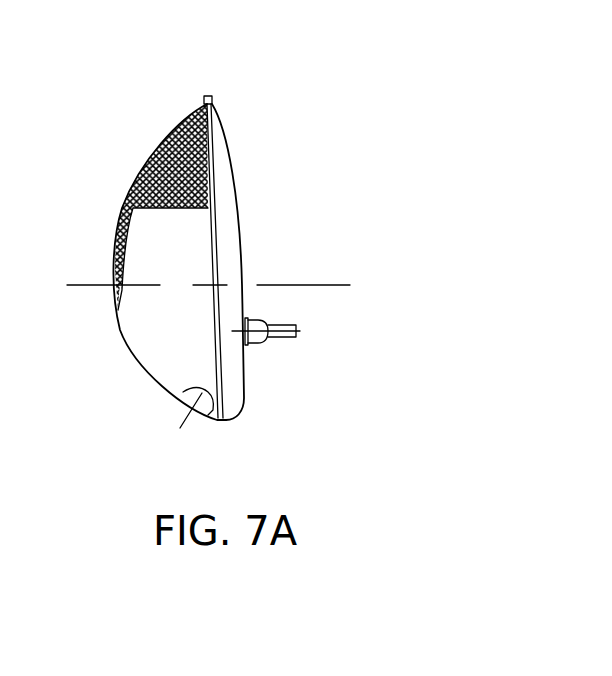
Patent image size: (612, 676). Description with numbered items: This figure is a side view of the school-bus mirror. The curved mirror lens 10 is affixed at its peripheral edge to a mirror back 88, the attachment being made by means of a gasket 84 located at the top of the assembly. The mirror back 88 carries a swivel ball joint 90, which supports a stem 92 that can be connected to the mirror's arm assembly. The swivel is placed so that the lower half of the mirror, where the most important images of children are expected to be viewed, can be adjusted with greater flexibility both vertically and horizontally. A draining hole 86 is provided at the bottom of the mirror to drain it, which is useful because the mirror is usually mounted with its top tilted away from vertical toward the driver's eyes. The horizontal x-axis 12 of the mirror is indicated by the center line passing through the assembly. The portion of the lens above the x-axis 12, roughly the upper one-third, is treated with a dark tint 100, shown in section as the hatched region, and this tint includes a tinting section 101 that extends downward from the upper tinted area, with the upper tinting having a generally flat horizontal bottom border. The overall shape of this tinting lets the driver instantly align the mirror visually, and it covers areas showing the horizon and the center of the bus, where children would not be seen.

The mirror lens 10 is at (143, 352).
The x-axis 12 is at (80, 285).
The gasket 84 is at (212, 100).
The draining hole 86 is at (184, 426).
The mirror back 88 is at (225, 193).
The swivel ball joint 90 is at (257, 345).
The stem 92 is at (288, 323).
The dark tint 100 is at (162, 142).
The tinting section 101 is at (118, 240).